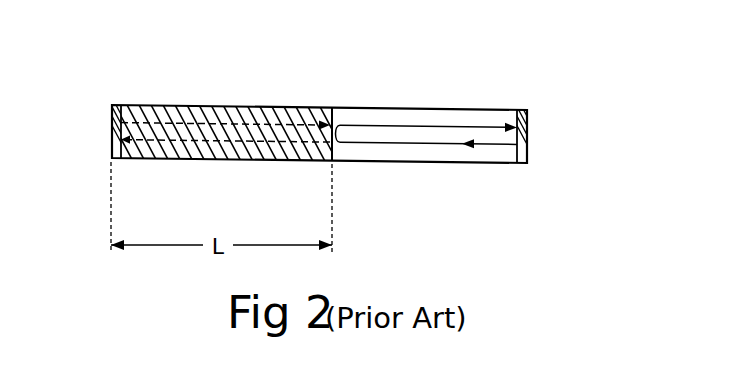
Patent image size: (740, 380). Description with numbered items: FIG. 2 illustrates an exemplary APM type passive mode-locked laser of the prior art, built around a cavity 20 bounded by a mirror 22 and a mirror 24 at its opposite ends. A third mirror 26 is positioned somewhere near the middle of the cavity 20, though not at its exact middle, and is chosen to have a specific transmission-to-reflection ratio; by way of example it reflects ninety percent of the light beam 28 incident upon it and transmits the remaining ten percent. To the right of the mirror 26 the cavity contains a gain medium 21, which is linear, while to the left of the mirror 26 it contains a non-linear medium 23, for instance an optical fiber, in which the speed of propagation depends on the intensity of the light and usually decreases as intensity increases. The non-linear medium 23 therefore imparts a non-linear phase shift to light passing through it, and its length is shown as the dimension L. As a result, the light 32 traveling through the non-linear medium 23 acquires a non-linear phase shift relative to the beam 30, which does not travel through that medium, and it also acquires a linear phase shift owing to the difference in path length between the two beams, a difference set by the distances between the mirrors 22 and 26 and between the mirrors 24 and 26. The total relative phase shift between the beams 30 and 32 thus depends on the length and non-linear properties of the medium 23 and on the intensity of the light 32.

The cavity 20 is at (393, 86).
The gain medium 21 is at (494, 115).
The mirror 22 is at (575, 125).
The non-linear medium 23 is at (150, 105).
The mirror 24 is at (112, 132).
The third mirror 26 is at (343, 106).
The light beam 28 is at (418, 145).
The beam 30 is at (418, 122).
The light 32 is at (253, 106).